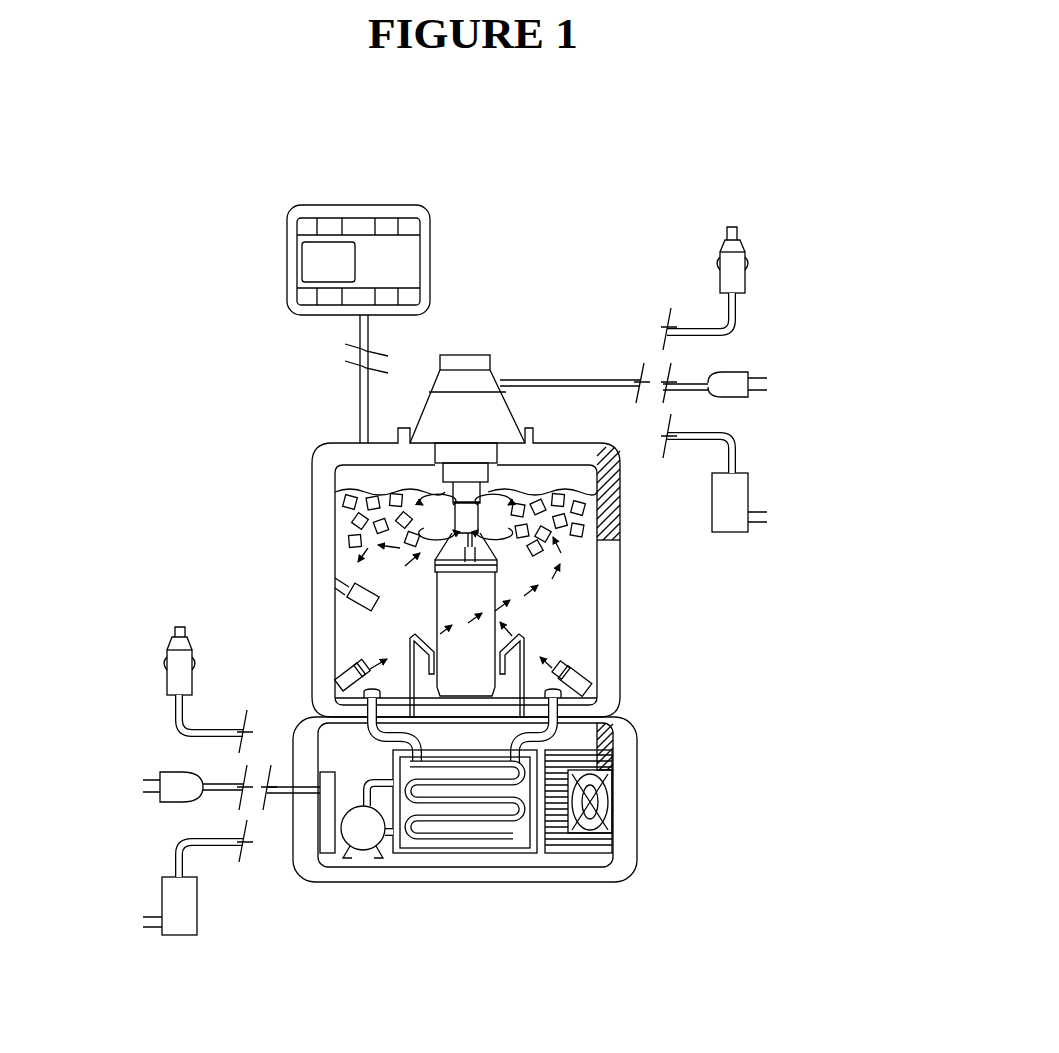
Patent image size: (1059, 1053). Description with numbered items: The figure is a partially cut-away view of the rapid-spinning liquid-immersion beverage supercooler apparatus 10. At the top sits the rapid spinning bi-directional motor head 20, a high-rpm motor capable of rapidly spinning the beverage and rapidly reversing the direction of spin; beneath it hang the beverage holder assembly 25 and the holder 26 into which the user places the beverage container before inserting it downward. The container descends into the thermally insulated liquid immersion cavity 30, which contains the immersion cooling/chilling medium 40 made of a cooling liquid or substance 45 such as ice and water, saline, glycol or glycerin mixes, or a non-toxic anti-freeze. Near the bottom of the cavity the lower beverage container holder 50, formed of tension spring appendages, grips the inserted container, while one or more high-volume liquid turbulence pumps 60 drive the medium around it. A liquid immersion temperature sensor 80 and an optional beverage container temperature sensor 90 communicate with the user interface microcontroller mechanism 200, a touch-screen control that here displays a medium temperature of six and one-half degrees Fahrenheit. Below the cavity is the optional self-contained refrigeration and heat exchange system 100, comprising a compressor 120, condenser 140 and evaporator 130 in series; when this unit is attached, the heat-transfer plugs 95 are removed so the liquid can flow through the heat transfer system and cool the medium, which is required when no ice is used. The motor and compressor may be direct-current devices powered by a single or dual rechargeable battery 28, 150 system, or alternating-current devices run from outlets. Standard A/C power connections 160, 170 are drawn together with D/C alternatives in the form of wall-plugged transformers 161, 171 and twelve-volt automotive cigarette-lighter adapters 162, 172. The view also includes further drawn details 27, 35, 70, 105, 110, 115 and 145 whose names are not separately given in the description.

The rapid-spinning liquid-immersion beverage supercooler apparatus 10 is at (268, 376).
The user interface microcontroller mechanism 200 is at (430, 227).
The rapid spinning bi-directional motor head 20 is at (500, 412).
The beverage holder assembly 25 is at (450, 493).
The beverage holder 26 is at (485, 558).
The drive shaft 27 is at (475, 522).
The rechargeable battery 28 is at (485, 378).
The thermally insulated liquid immersion cavity 30 is at (322, 492).
The insulated wall 35 is at (610, 510).
The immersion cooling/chilling medium 40 is at (578, 610).
The cooling liquid or substance 45 is at (348, 520).
The lower beverage container holder 50 is at (410, 658).
The high-volume liquid turbulence pump 60 is at (588, 682).
The beverage container 70 is at (440, 628).
The liquid immersion temperature sensor 80 is at (347, 598).
The beverage container temperature sensor 90 is at (448, 552).
The heat-transfer plugs 95 is at (560, 705).
The self-contained refrigeration and heat exchange system 100 is at (620, 870).
The base housing wall 105 is at (614, 760).
The fluid conduit 110 is at (372, 713).
The return conduit 115 is at (520, 753).
The compressor 120 is at (363, 842).
The evaporator 130 is at (467, 838).
The condenser 140 is at (565, 840).
The fan 145 is at (600, 818).
The rechargeable battery 150 is at (328, 843).
The A/C power connection 160 is at (175, 797).
The wall-plugged transformer 161 is at (168, 897).
The 12V automotive cigarette-lighter adapter 162 is at (173, 681).
The A/C power connection 170 is at (732, 392).
The wall-plugged transformer 171 is at (740, 495).
The 12V automotive cigarette-lighter adapter 172 is at (737, 282).